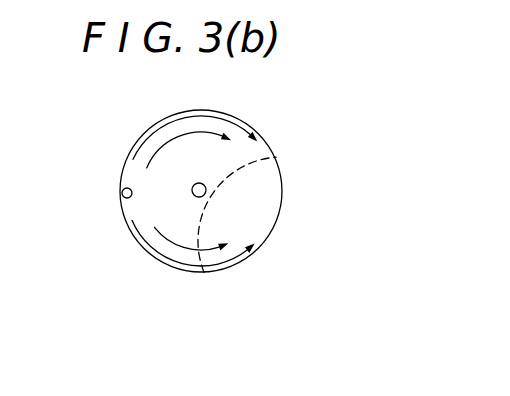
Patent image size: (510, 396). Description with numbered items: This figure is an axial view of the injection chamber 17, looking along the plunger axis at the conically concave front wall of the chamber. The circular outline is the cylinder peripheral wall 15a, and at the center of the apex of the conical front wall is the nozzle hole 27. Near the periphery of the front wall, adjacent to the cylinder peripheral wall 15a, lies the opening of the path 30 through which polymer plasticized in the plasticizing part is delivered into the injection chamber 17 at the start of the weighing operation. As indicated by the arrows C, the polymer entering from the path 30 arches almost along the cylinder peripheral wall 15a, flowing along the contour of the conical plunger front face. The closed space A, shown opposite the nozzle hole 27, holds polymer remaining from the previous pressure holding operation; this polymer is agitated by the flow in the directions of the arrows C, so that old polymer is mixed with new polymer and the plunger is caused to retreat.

The cylinder peripheral wall 15a is at (139, 146).
The path 30 is at (122, 194).
The nozzle hole 27 is at (206, 189).
The injection chamber 17 is at (255, 160).
The arrows C (polymer flow) C is at (195, 130).
The closed space A is at (250, 223).